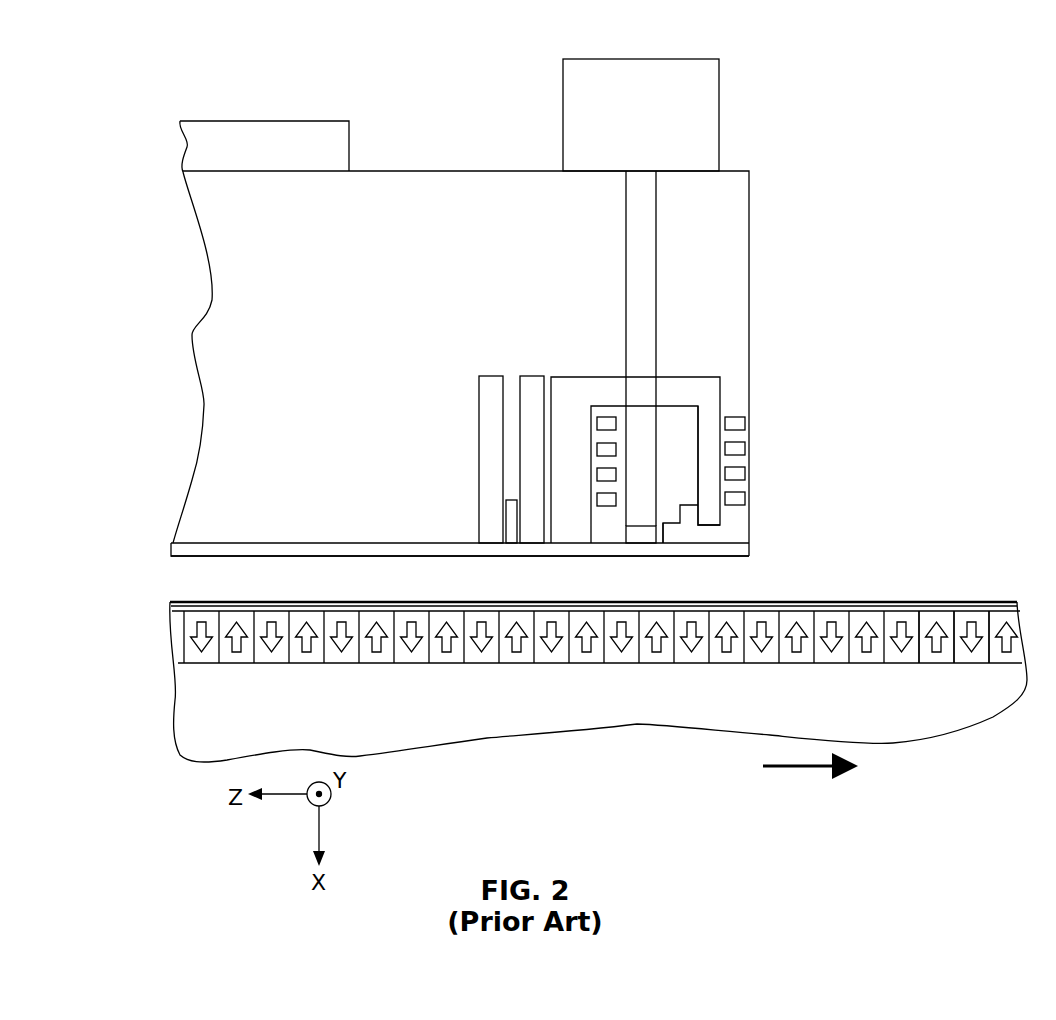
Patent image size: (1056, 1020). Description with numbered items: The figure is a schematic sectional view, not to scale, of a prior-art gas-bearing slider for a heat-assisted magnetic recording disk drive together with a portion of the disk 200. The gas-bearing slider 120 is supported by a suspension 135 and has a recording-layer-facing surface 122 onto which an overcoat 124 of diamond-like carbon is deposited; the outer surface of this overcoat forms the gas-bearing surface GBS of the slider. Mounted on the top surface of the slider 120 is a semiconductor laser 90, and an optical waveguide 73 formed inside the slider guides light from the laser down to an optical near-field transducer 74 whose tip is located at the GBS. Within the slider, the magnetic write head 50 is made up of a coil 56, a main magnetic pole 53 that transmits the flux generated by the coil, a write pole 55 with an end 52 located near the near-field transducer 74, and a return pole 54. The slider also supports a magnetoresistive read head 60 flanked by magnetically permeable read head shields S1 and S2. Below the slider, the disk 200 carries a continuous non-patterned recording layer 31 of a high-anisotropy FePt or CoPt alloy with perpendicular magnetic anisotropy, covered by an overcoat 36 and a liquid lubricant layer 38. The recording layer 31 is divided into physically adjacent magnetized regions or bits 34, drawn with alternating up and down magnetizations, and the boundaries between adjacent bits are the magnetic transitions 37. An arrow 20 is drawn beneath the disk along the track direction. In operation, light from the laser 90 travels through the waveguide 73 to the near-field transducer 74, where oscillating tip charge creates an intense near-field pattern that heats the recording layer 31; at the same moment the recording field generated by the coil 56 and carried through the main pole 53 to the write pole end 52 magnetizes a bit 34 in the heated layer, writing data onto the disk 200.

The disk motion direction 20 is at (798, 768).
The recording layer 31 is at (155, 612).
The magnetized regions or bits 34 is at (972, 625).
The overcoat 36 is at (913, 608).
The magnetic transitions 37 is at (918, 664).
The liquid lubricant layer 38 is at (848, 602).
The magnetic write head 50 is at (566, 312).
The write pole end 52 is at (670, 520).
The main magnetic pole 53 is at (713, 400).
The return pole 54 is at (572, 388).
The write pole 55 is at (688, 535).
The coil 56 is at (590, 406).
The magnetoresistive read head 60 is at (507, 528).
The optical waveguide 73 is at (640, 320).
The optical near-field transducer 74 is at (637, 525).
The semiconductor laser 90 is at (705, 115).
The gas-bearing slider 120 is at (217, 435).
The recording-layer-facing surface 122 is at (287, 541).
The overcoat 124 is at (320, 556).
The suspension 135 is at (337, 128).
The disk 200 is at (903, 732).
The read head shield S1 is at (491, 460).
The read head shield S2 is at (533, 372).
The gas-bearing surface GBS is at (732, 556).